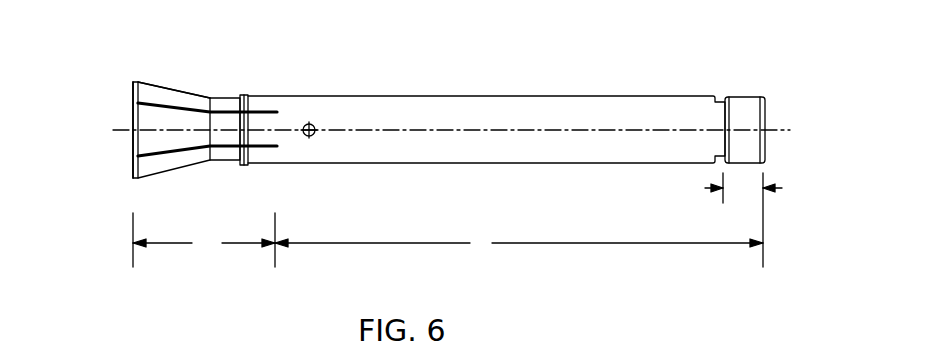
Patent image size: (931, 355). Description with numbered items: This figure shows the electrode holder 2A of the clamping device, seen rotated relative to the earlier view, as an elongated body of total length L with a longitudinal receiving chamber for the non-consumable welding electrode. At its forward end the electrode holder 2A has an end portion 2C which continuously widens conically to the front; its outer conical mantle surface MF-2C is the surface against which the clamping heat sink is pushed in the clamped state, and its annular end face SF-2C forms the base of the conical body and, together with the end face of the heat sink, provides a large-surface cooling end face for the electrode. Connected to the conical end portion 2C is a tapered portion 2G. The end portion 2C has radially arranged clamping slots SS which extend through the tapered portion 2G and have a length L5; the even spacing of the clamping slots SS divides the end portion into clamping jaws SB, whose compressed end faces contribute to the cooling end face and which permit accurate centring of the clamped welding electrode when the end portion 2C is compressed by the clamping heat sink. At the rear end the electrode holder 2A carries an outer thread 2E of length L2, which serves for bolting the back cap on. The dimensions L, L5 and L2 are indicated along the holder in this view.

The electrode holder 2A is at (487, 93).
The end portion 2C is at (167, 170).
The thread 2E is at (741, 96).
The tapered portion 2G is at (228, 97).
The clamping slots SS is at (185, 108).
The clamping jaws SB is at (150, 143).
The mantle surface MF-2C is at (163, 82).
The annular end face SF-2C is at (132, 122).
The length of clamping slots L5 is at (204, 240).
The total length L is at (519, 220).
The length of thread L2 is at (743, 188).